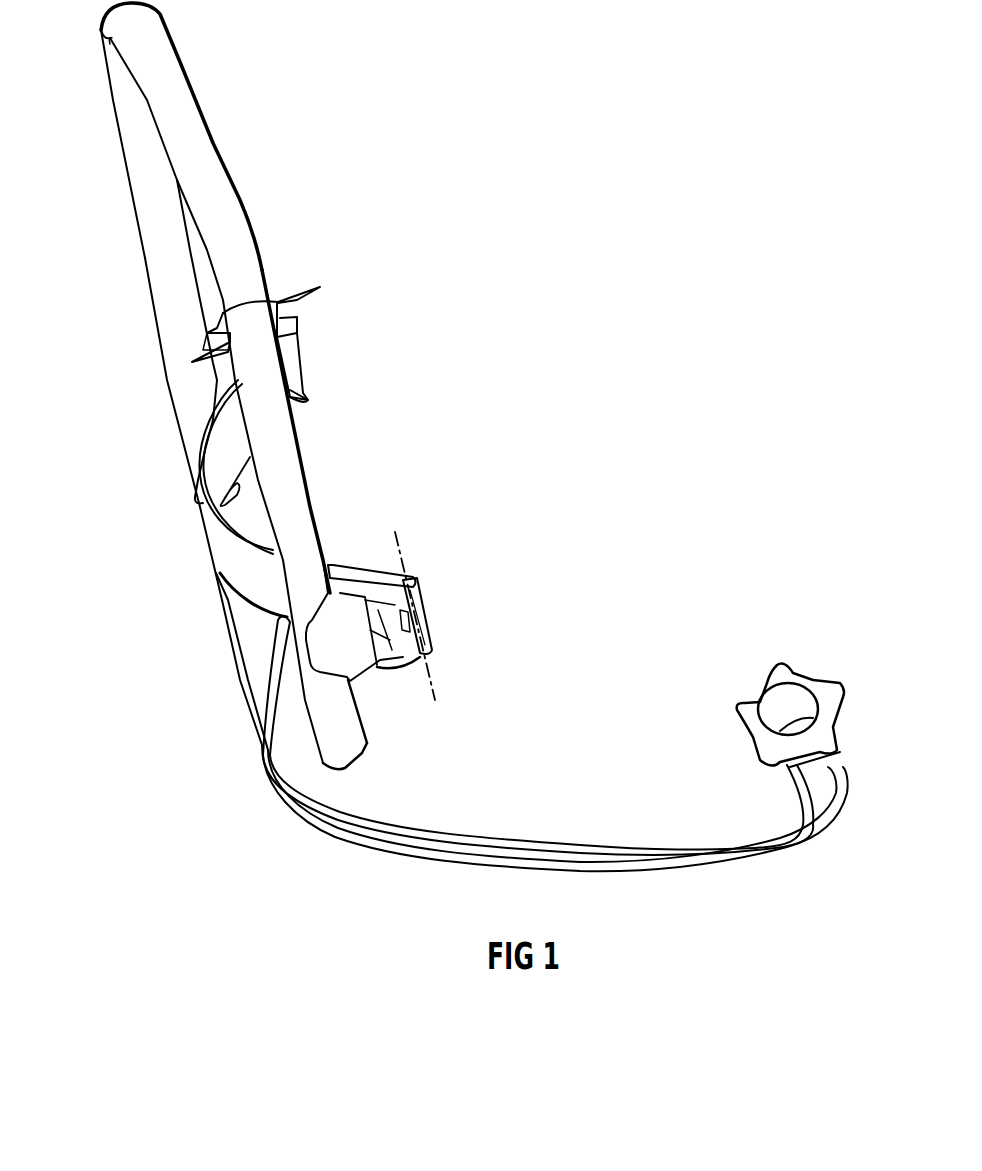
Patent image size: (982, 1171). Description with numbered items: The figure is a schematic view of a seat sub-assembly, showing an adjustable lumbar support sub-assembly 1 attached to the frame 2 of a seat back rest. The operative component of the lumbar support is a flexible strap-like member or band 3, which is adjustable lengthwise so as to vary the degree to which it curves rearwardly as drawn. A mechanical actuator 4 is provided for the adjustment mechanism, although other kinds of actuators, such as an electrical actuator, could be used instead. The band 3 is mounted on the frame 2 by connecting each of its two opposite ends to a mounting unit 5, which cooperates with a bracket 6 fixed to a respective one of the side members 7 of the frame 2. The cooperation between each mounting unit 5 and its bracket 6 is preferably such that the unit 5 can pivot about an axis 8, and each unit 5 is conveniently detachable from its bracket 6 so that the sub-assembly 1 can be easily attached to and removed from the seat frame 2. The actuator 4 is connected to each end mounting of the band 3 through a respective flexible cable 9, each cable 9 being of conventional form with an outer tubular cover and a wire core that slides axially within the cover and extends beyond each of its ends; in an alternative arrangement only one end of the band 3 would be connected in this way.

The adjustable lumbar support sub-assembly 1 is at (348, 533).
The frame 2 is at (205, 155).
The band 3 is at (244, 557).
The mechanical actuator 4 is at (763, 740).
The mounting unit 5 is at (428, 600).
The bracket 6 is at (390, 710).
The side member 7 is at (163, 278).
The axis 8 is at (400, 558).
The flexible cable 9 is at (272, 683).